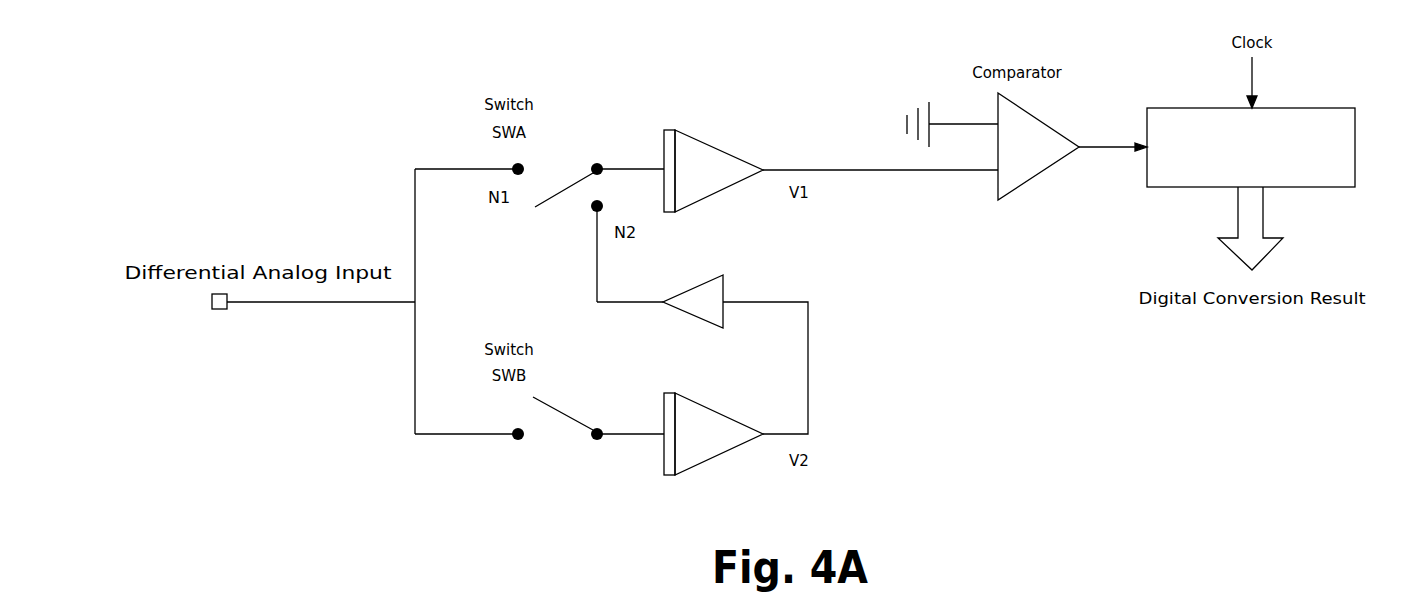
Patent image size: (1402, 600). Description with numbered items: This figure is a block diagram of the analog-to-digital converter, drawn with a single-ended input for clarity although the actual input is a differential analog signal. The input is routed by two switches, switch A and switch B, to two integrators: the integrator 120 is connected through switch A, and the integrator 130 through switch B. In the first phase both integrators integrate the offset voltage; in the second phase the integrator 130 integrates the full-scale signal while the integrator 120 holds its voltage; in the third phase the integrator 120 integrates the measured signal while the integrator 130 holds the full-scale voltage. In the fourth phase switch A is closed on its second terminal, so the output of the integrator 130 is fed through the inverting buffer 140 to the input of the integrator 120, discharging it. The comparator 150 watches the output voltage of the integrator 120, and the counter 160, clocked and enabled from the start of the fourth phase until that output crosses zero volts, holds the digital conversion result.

The integrator 120 is at (712, 146).
The integrator 130 is at (717, 455).
The inverting buffer 140 is at (707, 281).
The comparator 150 is at (1028, 180).
The counter 160 is at (1315, 108).